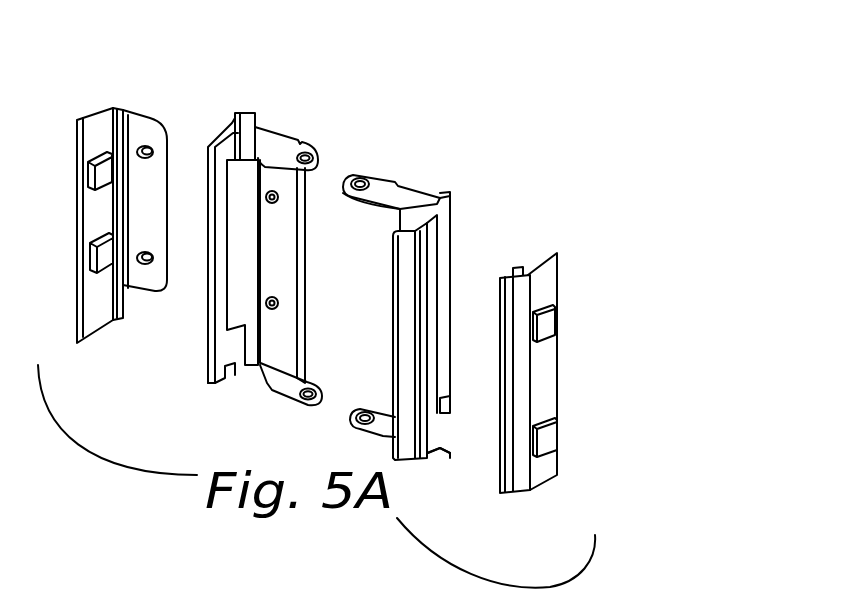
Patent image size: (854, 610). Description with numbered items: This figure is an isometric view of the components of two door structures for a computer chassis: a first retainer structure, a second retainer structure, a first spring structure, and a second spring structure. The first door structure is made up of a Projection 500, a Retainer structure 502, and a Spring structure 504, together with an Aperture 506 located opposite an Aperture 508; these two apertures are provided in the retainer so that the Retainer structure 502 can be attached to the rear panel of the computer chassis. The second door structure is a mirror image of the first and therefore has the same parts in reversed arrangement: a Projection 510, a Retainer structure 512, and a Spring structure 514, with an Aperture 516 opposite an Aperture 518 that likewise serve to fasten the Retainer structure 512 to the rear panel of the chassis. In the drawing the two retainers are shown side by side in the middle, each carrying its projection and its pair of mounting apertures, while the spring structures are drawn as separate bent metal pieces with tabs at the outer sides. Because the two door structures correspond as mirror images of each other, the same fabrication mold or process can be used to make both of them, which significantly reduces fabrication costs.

The projection 500 is at (282, 264).
The retainer structure 502 is at (262, 368).
The spring structure 504 is at (117, 313).
The aperture 506 is at (305, 143).
The aperture 508 is at (308, 401).
The projection 510 is at (534, 306).
The retainer structure 512 is at (430, 463).
The spring structure 514 is at (550, 478).
The aperture 516 is at (363, 177).
The aperture 518 is at (365, 410).